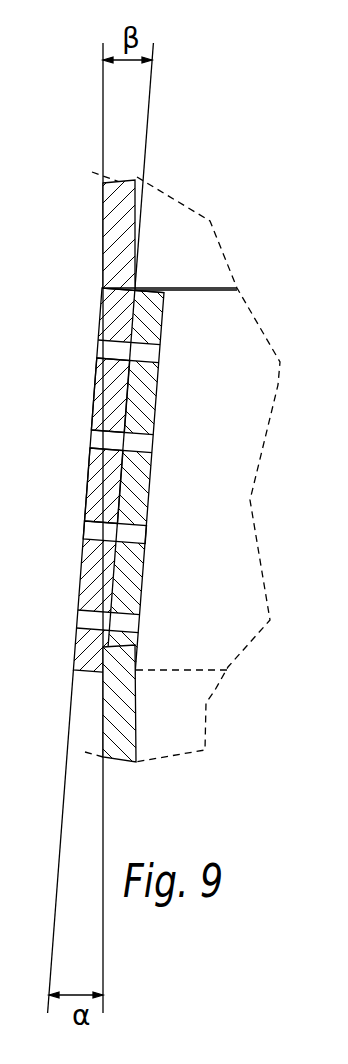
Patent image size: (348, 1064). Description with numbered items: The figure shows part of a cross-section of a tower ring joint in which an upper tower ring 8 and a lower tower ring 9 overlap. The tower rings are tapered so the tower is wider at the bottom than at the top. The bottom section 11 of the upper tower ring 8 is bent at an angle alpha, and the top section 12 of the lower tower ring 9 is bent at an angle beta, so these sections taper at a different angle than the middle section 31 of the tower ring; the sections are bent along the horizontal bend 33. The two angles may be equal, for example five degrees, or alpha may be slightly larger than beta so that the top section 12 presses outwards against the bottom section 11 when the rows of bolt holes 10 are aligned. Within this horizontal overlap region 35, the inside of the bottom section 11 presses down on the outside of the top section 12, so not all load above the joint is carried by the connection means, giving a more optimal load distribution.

The upper tower ring 8 is at (116, 266).
The lower tower ring 9 is at (122, 651).
The bolt holes 10 is at (97, 531).
The bottom section 11 is at (83, 463).
The top section 12 is at (157, 487).
The middle section 31 is at (122, 220).
The horizontal bend 33 is at (103, 292).
The horizontal overlap region 35 is at (84, 371).